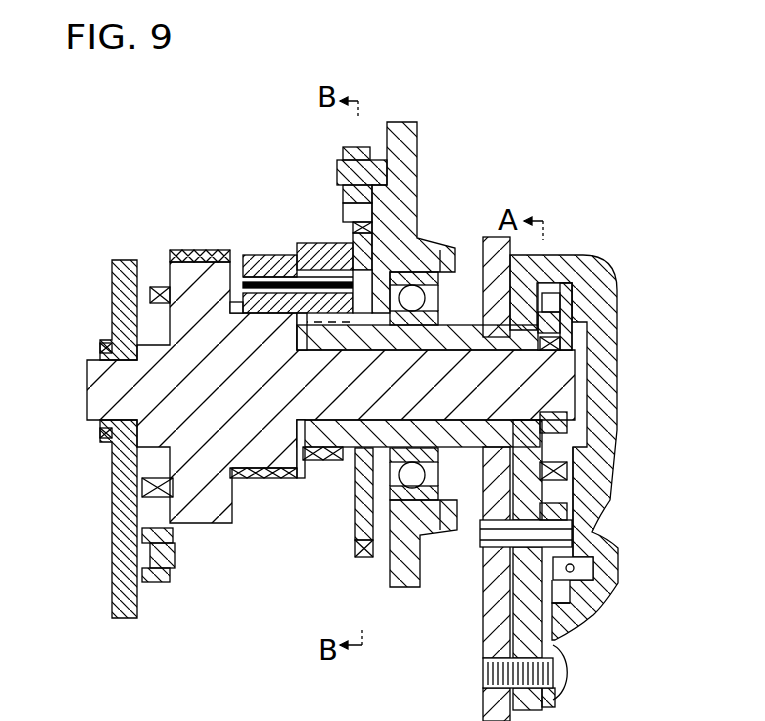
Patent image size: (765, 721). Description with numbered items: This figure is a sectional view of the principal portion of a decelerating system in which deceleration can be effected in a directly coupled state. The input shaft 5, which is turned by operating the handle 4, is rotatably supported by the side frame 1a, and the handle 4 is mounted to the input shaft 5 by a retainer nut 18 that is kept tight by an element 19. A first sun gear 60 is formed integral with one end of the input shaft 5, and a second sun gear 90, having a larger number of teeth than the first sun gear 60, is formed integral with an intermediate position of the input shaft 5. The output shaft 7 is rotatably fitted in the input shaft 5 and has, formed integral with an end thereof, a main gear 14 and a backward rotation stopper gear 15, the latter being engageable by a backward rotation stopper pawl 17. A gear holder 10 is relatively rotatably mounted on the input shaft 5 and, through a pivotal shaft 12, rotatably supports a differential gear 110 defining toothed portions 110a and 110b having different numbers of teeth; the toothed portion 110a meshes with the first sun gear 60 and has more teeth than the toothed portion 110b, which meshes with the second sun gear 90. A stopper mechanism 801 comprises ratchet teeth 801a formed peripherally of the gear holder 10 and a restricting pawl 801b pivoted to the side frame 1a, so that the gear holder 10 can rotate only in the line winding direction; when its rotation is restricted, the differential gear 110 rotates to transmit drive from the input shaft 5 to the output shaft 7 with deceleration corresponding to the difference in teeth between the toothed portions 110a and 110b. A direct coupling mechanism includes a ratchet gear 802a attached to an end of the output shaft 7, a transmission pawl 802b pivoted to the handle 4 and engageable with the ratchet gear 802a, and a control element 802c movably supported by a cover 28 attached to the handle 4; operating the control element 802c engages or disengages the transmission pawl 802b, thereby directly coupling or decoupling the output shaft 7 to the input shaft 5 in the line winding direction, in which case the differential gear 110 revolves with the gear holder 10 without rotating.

The side frame 1a is at (119, 287).
The handle 4 is at (490, 632).
The input shaft 5 is at (460, 330).
The output shaft 7 is at (457, 410).
The gear holder 10 is at (365, 247).
The pivotal shaft 12 is at (232, 250).
The main gear 14 is at (160, 287).
The backward rotation stopper gear 15 is at (121, 262).
The backward rotation stopper pawl 17 is at (152, 513).
The retainer nut 18 is at (535, 317).
The element for keeping the retainer nut tight 19 is at (527, 625).
The cover 28 is at (600, 378).
The first sun gear 60 is at (327, 460).
The second sun gear 90 is at (265, 478).
The differential gear 110 is at (281, 252).
The toothed portion 110a is at (286, 256).
The toothed portion 110b is at (252, 266).
The stopper mechanism 801 is at (340, 207).
The ratchet teeth 801a is at (363, 212).
The restricting pawl 801b is at (352, 245).
The ratchet gear 802a is at (553, 440).
The transmission pawl 802b is at (553, 495).
The control element 802c is at (607, 570).